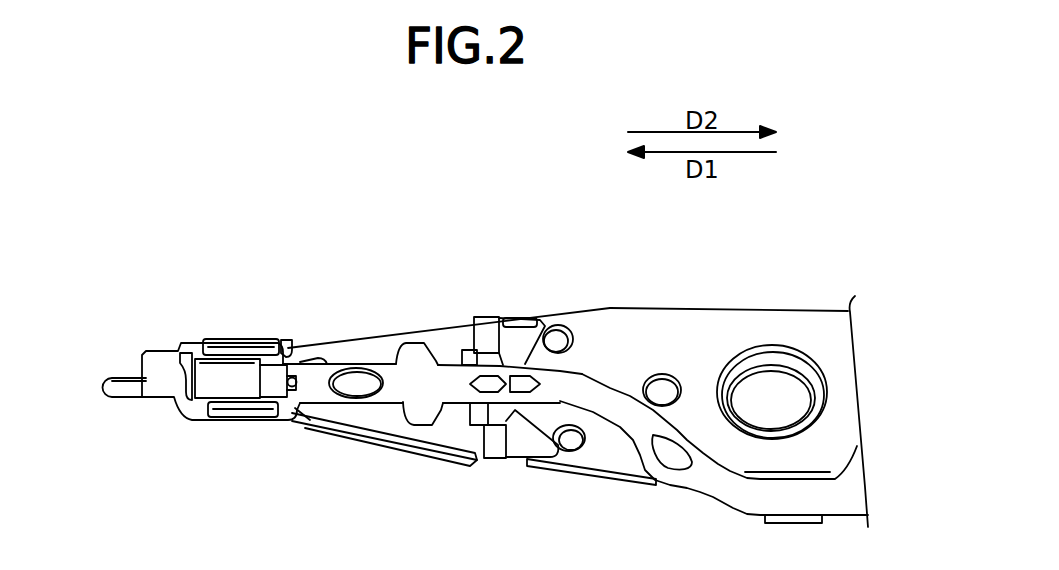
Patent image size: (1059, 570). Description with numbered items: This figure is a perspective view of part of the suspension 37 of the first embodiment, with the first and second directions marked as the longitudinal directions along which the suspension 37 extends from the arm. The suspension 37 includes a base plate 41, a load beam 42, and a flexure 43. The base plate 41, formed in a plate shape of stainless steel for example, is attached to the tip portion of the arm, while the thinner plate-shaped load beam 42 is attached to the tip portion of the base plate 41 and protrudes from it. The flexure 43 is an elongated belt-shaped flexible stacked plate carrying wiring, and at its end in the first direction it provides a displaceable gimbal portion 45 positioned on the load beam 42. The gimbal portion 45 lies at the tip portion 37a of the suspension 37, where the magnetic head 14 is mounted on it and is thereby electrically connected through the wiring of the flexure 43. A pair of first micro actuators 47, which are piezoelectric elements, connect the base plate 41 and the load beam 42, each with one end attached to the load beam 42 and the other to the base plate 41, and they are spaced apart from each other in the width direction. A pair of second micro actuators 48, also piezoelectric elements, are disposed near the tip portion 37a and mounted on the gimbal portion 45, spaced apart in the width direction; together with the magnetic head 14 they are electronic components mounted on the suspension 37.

The magnetic head 14 is at (180, 397).
The suspension 37 is at (767, 244).
The tip portion 37a is at (138, 350).
The base plate 41 is at (804, 326).
The load beam 42 is at (418, 322).
The flexure 43 is at (357, 343).
The gimbal portion 45 is at (286, 334).
The first micro actuators 47 is at (530, 314).
The second micro actuators 48 is at (210, 350).